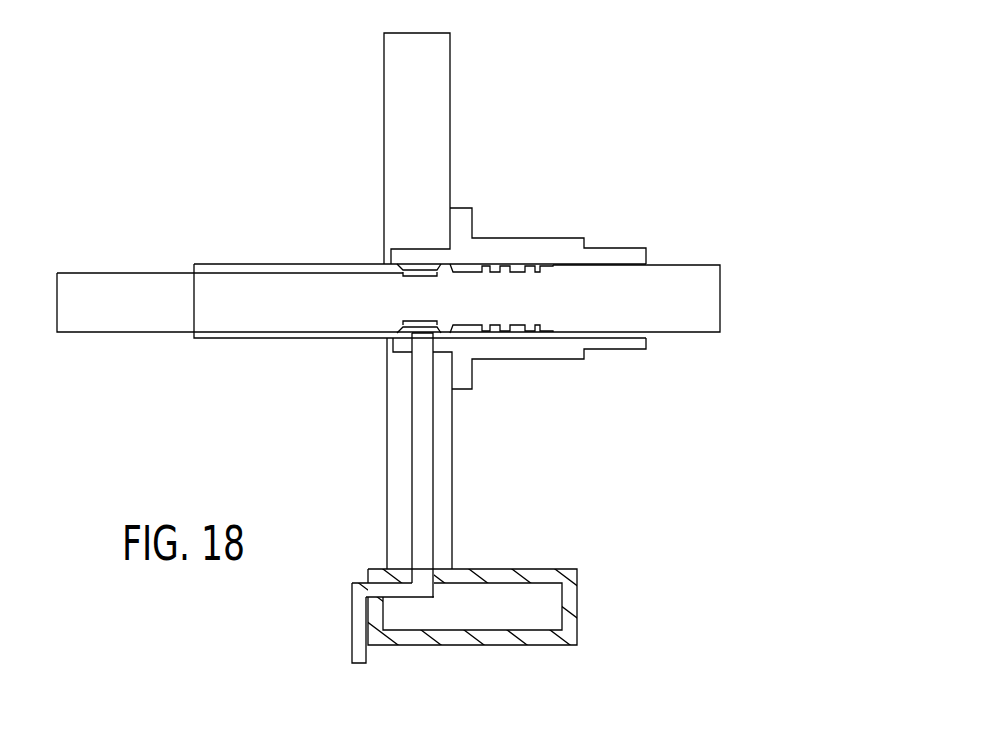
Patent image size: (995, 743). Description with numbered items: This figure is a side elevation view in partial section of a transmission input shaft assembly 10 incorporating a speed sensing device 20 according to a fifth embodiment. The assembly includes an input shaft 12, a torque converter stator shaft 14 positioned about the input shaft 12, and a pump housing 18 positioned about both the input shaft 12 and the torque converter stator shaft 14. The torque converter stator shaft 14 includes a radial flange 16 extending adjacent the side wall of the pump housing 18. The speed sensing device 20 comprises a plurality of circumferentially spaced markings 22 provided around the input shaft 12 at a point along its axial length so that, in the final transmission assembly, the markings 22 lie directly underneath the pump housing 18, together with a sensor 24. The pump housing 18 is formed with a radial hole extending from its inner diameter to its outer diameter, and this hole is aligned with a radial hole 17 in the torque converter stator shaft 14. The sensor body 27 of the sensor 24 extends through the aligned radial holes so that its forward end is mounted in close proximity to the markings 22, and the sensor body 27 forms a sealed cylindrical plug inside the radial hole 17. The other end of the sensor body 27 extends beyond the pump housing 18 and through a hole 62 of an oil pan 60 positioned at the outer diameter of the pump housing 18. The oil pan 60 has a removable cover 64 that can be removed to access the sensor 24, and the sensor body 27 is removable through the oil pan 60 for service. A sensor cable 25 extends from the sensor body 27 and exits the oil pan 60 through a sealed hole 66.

The transmission input shaft assembly 10 is at (598, 115).
The input shaft 12 is at (128, 333).
The torque converter stator shaft 14 is at (297, 340).
The radial flange 16 is at (473, 222).
The radial hole 17 is at (410, 345).
The pump housing 18 is at (449, 70).
The speed sensing device 20 is at (422, 336).
The circumferentially spaced markings 22 is at (411, 264).
The sensor 24 is at (412, 440).
The sensor cable 25 is at (365, 616).
The sensor body 27 is at (427, 472).
The oil pan 60 is at (459, 601).
The hole 62 is at (440, 575).
The removable cover 64 is at (510, 645).
The sealed hole 66 is at (367, 580).